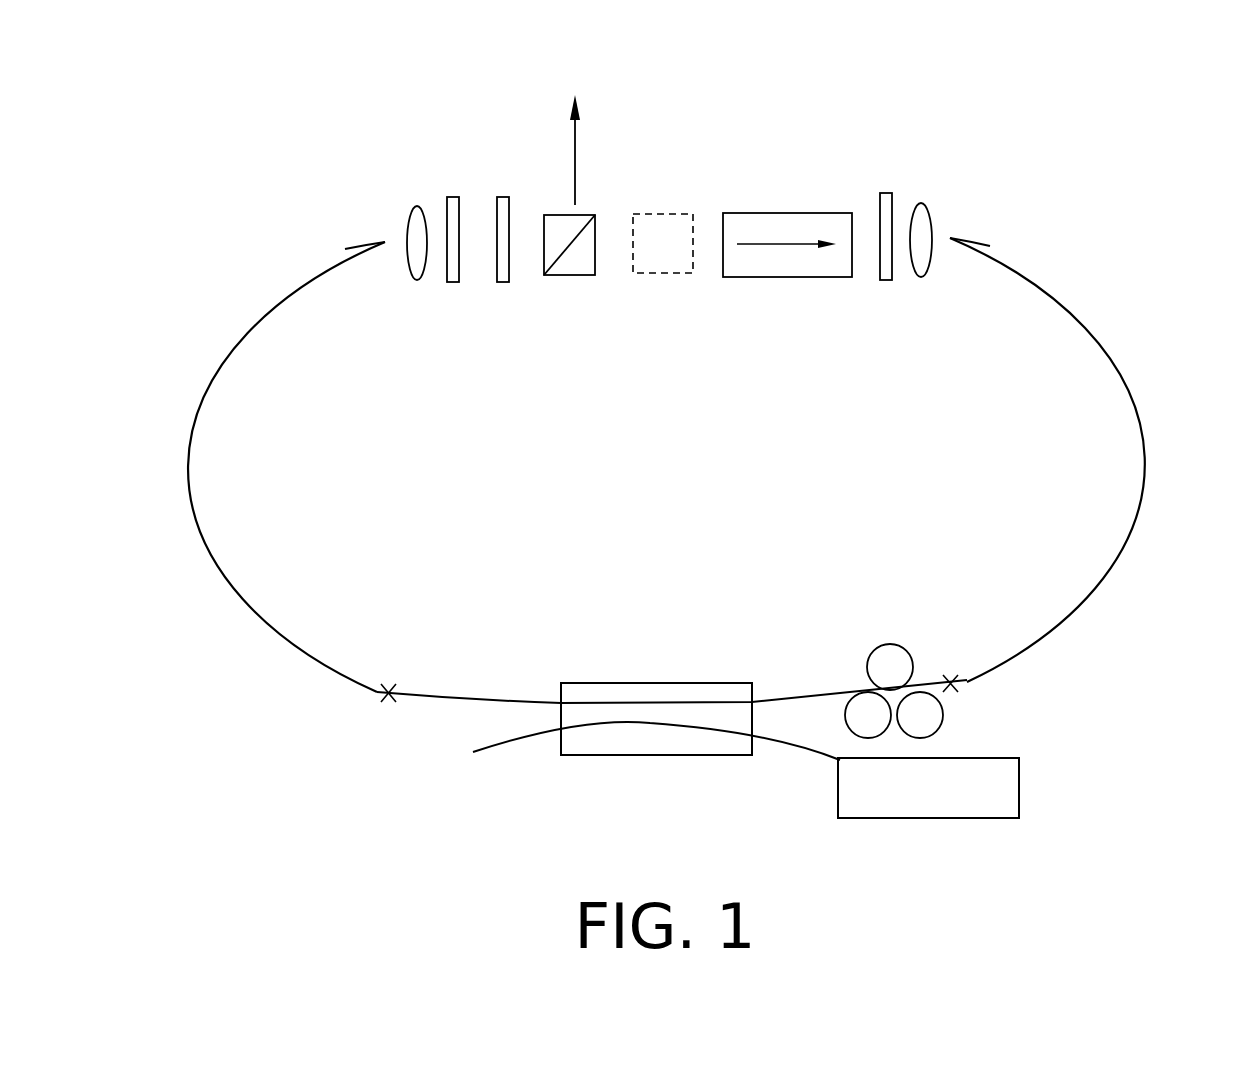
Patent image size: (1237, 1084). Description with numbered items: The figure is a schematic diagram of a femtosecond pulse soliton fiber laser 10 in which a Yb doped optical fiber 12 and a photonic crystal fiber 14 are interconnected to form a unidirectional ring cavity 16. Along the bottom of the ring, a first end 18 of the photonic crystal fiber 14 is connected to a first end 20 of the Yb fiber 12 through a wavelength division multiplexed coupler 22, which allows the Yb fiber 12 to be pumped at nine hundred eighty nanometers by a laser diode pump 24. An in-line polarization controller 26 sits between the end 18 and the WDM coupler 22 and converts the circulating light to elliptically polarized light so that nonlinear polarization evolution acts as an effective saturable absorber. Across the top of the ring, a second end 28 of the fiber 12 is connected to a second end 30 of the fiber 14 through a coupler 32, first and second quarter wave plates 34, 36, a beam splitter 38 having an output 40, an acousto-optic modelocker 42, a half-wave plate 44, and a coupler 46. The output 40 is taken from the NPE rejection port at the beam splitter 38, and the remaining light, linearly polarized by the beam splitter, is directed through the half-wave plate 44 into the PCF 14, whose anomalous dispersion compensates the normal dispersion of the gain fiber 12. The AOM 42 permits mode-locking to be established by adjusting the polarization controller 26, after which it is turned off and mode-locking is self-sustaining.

The femtosecond pulse soliton fiber laser 10 is at (1112, 285).
The Yb doped optical fiber 12 is at (270, 640).
The photonic crystal fiber 14 is at (1097, 580).
The unidirectional ring cavity 16 is at (442, 632).
The first end of PCF fiber 18 is at (970, 680).
The first end of Yb fiber 20 is at (377, 690).
The wavelength division multiplexed coupler 22 is at (642, 682).
The laser diode pump 24 is at (1020, 788).
The in-line polarization controller 26 is at (912, 640).
The second end of fiber 12 28 is at (340, 252).
The second end of fiber 14 30 is at (997, 252).
The coupler 32 is at (407, 218).
The first quarter wave plate 34 is at (447, 275).
The second quarter wave plate 36 is at (508, 208).
The beam splitter 38 is at (588, 275).
The output 40 is at (575, 153).
The acousto-optic modelocker 42 is at (660, 213).
The half-wave plate 44 is at (878, 205).
The coupler 46 is at (930, 213).